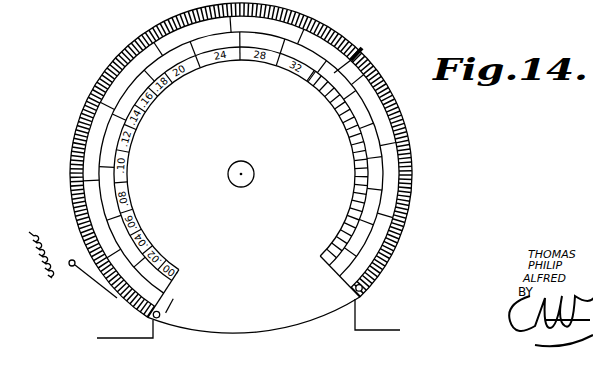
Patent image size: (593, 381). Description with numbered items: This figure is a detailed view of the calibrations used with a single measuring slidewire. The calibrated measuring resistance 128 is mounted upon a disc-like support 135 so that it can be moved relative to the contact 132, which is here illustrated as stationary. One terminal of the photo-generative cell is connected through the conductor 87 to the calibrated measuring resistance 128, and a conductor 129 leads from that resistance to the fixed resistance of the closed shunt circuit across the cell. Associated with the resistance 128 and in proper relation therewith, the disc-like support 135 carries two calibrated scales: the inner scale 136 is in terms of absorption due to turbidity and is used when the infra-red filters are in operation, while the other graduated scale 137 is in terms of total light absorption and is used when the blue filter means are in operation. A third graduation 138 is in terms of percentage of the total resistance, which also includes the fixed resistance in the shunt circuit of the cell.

The calibrated measuring resistance 128 is at (124, 53).
The third graduation 138 is at (393, 155).
The inner calibrated scale 136 is at (292, 53).
The graduated scale 137 is at (362, 48).
The disc-like support 135 is at (285, 312).
The conductor 129 is at (384, 329).
The conductor 87 is at (130, 338).
The contact 132 is at (92, 279).